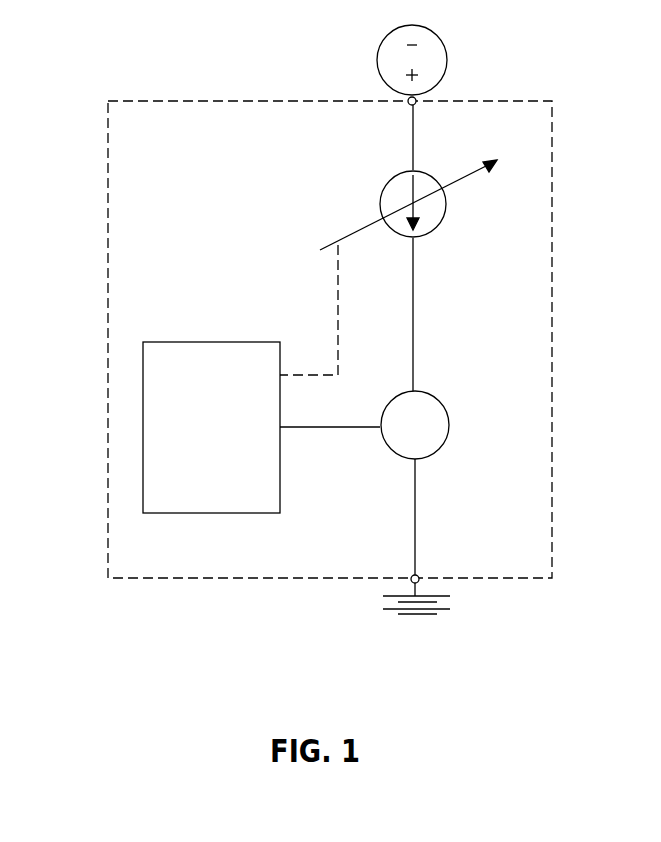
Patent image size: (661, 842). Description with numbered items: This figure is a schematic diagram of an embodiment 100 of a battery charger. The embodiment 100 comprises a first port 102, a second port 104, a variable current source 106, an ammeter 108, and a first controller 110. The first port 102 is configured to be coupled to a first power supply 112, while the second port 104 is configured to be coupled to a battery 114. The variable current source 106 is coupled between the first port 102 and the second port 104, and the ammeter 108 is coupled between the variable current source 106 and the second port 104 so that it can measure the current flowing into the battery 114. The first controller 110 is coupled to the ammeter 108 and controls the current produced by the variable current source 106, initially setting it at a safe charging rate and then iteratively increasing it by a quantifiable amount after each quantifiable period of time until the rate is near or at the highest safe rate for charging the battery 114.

The battery charger embodiment 100 is at (330, 339).
The first port 102 is at (408, 105).
The second port 104 is at (411, 576).
The variable current source 106 is at (441, 225).
The ammeter 108 is at (443, 447).
The first controller 110 is at (261, 427).
The first power supply 112 is at (442, 78).
The battery 114 is at (445, 616).